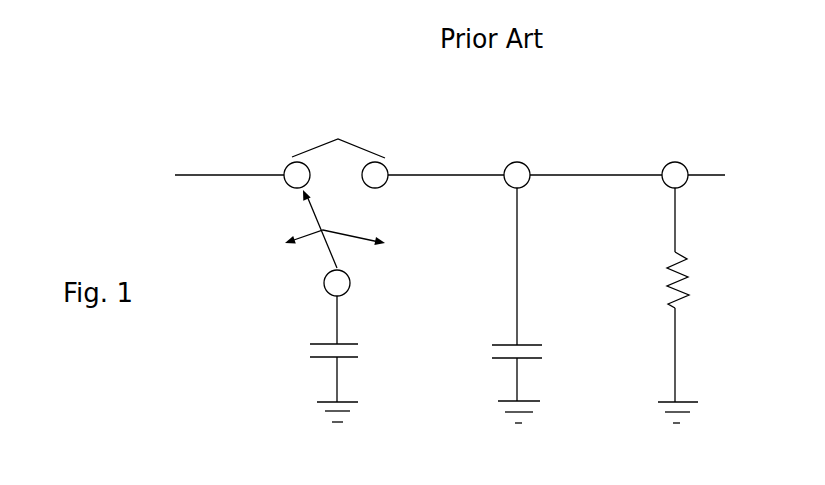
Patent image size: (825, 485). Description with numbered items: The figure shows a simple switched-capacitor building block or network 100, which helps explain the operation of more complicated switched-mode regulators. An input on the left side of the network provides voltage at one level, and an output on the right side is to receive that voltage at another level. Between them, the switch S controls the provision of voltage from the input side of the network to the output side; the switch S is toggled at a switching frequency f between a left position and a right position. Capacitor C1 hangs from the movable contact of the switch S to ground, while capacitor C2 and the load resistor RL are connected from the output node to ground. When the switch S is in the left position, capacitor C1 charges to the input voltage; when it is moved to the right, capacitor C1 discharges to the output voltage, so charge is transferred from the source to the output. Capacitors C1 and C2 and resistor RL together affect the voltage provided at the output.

The prior art switched-capacitor circuit 100 is at (207, 146).
The switch S is at (336, 198).
The switching frequency f is at (341, 233).
The capacitor C1 is at (361, 359).
The capacitor C2 is at (539, 292).
The resistor RL is at (701, 292).